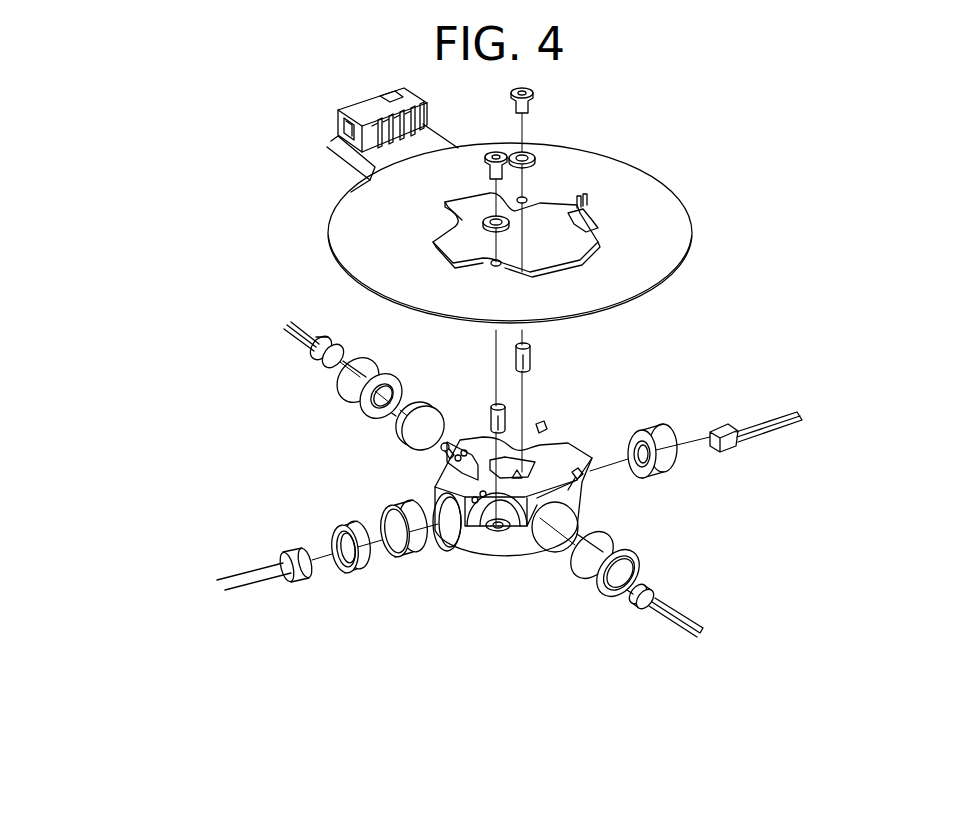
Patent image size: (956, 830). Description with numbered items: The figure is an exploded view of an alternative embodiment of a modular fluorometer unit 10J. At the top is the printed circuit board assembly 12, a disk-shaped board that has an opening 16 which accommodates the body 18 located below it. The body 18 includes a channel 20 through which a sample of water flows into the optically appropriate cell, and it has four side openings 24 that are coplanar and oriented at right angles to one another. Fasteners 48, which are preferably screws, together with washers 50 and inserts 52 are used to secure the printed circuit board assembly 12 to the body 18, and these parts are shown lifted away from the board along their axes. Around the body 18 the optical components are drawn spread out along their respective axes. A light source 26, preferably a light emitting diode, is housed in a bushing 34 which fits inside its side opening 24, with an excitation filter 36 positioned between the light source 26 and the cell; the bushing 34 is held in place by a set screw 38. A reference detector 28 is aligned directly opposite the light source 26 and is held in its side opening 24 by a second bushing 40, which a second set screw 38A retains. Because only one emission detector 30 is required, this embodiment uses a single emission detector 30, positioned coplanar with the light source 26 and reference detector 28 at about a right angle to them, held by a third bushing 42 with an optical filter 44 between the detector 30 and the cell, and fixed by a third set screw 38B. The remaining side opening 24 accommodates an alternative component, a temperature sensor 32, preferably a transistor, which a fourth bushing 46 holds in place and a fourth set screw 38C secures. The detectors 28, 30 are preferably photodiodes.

The modular fluorometer unit 10J is at (173, 282).
The printed circuit board assembly 12 is at (332, 144).
The opening 16 is at (446, 251).
The body 18 is at (503, 558).
The channel 20 is at (517, 482).
The side openings 24 is at (452, 538).
The light source 26 is at (284, 329).
The reference detector 28 is at (695, 640).
The emission detector 30 is at (228, 578).
The temperature sensor 32 is at (768, 428).
The bushing 34 is at (346, 399).
The excitation filter 36 is at (402, 440).
The set screw 38 is at (440, 449).
The second set screw 38A is at (590, 479).
The third set screw 38B is at (478, 505).
The fourth set screw 38C is at (546, 428).
The second bushing 40 is at (603, 596).
The third bushing 42 is at (346, 578).
The optical filter 44 is at (402, 576).
The fourth bushing 46 is at (672, 470).
The fasteners 48 is at (534, 92).
The washers 50 is at (536, 160).
The inserts 52 is at (490, 412).